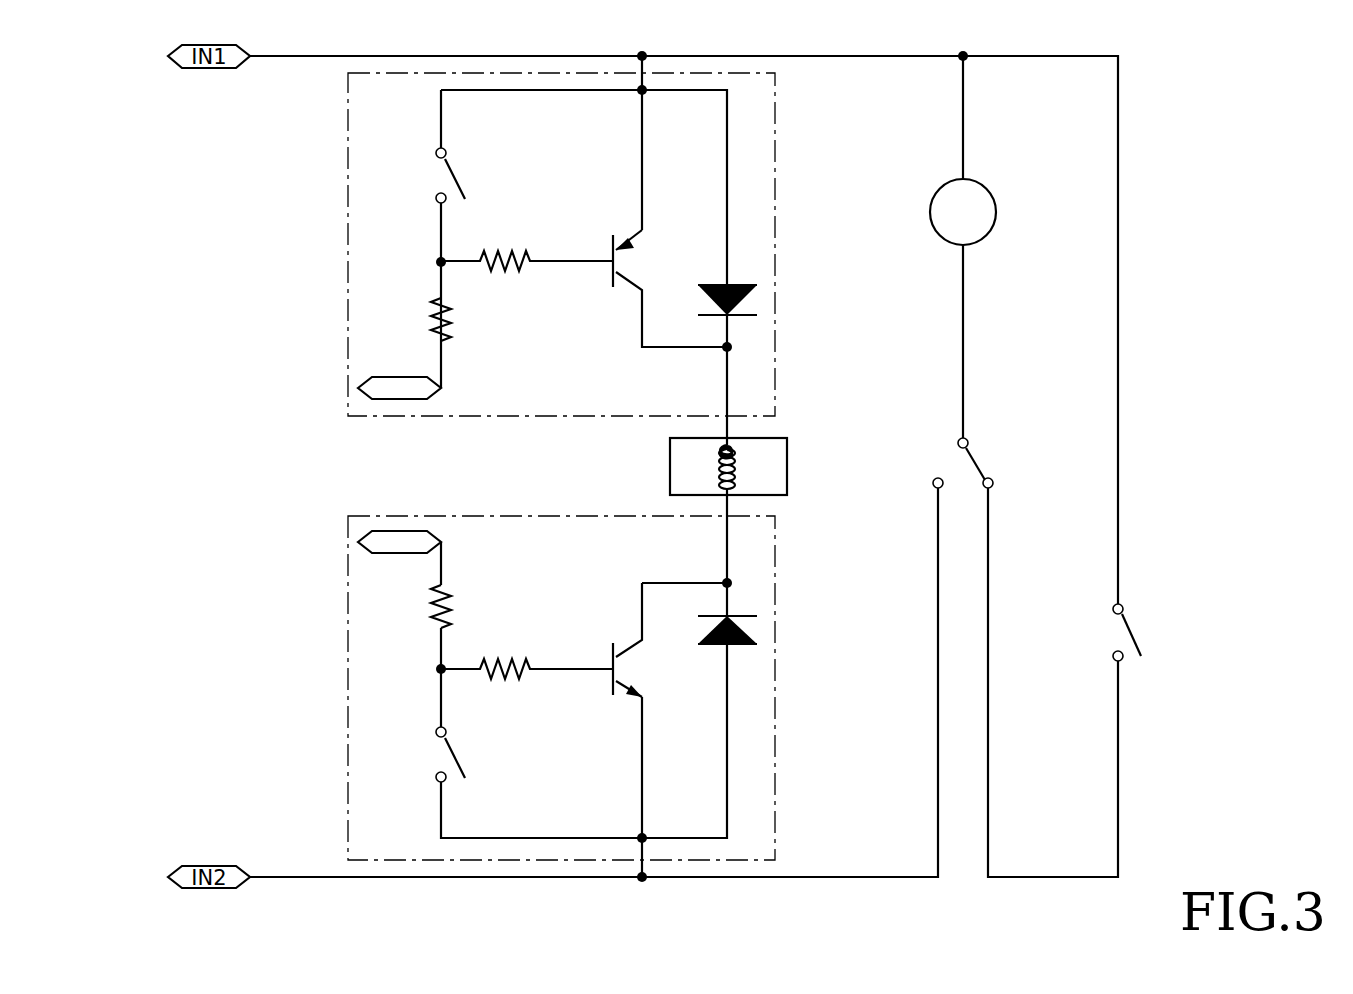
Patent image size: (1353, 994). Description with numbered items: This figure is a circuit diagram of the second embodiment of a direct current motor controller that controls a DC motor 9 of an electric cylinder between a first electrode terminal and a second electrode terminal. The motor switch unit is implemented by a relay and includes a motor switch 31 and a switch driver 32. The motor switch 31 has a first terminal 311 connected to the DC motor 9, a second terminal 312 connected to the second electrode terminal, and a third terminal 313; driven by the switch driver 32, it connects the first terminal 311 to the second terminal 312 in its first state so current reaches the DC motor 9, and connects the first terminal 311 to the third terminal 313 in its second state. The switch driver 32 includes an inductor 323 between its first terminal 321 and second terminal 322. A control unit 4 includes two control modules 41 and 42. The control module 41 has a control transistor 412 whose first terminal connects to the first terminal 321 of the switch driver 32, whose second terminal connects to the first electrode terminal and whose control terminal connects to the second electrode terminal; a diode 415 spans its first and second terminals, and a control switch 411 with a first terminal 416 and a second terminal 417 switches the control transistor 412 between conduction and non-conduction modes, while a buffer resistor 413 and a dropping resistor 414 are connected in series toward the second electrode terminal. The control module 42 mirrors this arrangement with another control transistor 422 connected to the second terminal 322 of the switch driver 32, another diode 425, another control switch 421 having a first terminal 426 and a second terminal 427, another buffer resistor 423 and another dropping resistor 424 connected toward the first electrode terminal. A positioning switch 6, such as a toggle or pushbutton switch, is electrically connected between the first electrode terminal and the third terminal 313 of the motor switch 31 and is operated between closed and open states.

The control unit 4 is at (336, 224).
The control module 41 is at (346, 275).
The control switch 411 is at (465, 177).
The control transistor 412 is at (612, 245).
The buffer resistor 413 is at (511, 272).
The dropping resistor 414 is at (435, 331).
The diode 415 is at (718, 285).
The first terminal of control switch 416 is at (435, 150).
The second terminal of control switch 417 is at (435, 197).
The control module 42 is at (346, 650).
The control switch 421 is at (465, 760).
The control transistor 422 is at (612, 650).
The buffer resistor 423 is at (505, 680).
The dropping resistor 424 is at (435, 620).
The diode 425 is at (710, 646).
The first terminal of control switch 426 is at (435, 777).
The second terminal of control switch 427 is at (437, 731).
The switch driver 32 is at (670, 468).
The first terminal of switch driver 321 is at (730, 440).
The second terminal of switch driver 322 is at (730, 496).
The inductor 323 is at (733, 470).
The motor switch 31 is at (969, 439).
The first terminal of motor switch 311 is at (970, 443).
The second terminal of motor switch 312 is at (935, 490).
The third terminal of motor switch 313 is at (993, 487).
The DC motor 9 is at (1010, 203).
The positioning switch 6 is at (1142, 600).